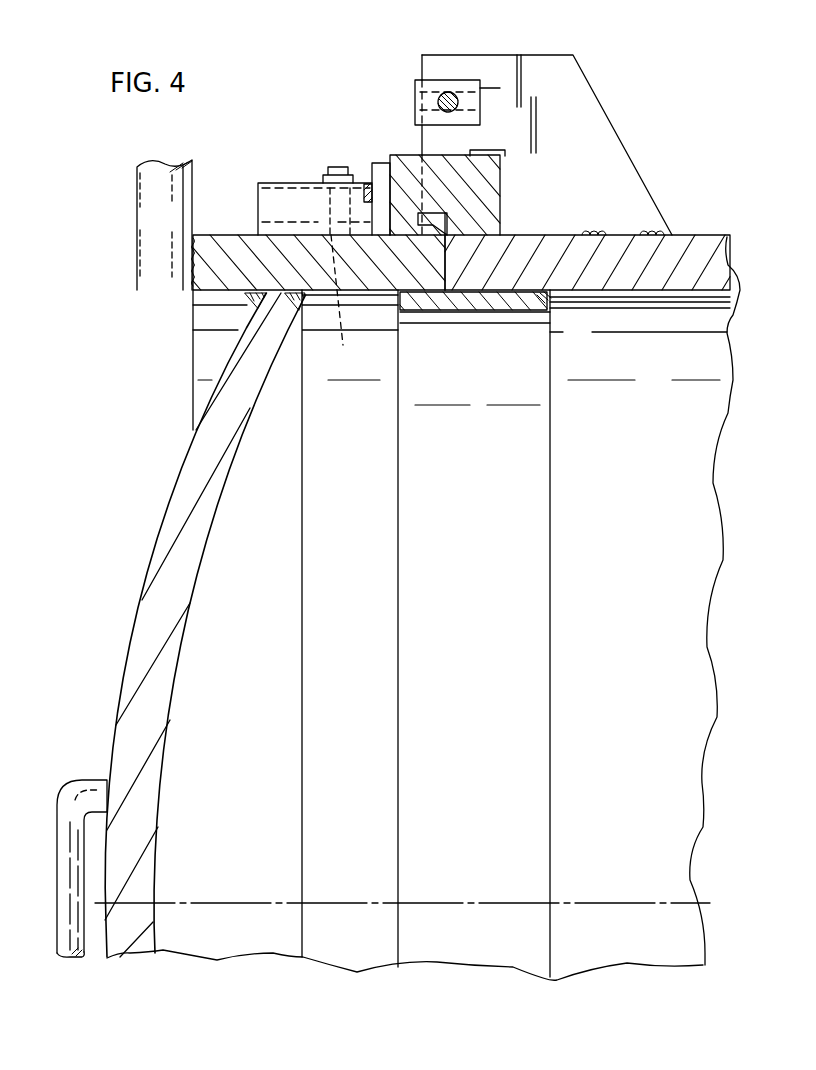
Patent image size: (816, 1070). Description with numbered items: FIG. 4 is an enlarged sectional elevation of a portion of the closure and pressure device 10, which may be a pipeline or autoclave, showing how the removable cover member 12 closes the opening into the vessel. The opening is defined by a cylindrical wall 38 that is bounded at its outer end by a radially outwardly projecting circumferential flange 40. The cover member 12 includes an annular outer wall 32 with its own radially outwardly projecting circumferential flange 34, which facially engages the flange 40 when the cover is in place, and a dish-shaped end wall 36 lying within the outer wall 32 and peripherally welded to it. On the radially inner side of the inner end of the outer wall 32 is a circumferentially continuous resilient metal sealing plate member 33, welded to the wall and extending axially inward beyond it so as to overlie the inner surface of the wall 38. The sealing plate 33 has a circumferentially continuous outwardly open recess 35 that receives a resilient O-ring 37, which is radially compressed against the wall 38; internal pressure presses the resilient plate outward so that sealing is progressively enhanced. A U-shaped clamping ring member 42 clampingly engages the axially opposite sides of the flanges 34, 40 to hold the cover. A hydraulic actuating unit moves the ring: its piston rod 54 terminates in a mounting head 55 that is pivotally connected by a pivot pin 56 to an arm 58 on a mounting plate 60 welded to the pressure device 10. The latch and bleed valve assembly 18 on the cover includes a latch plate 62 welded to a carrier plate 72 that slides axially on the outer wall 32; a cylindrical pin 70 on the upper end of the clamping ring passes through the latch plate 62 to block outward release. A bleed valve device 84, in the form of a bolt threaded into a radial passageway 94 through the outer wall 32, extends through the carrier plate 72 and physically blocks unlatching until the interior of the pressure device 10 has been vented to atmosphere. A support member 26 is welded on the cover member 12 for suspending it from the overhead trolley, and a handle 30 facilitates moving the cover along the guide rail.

The pressure device 10 is at (722, 152).
The cover member 12 is at (128, 383).
The latch and bleed valve assembly 18 is at (328, 101).
The support member 26 is at (140, 216).
The handles 30 is at (82, 782).
The annular outer wall 32 is at (223, 236).
The resilient metal sealing plate member 33 is at (545, 393).
The circumferential flange 34 is at (438, 212).
The recess 35 is at (638, 333).
The dish-shaped end wall 36 is at (134, 667).
The O-ring 37 is at (545, 294).
The cylindrical wall 38 is at (573, 240).
The circumferential flange 40 is at (455, 230).
The clamping ring member 42 is at (497, 160).
The piston rod 54 is at (452, 96).
The mounting head 55 is at (478, 88).
The pivot pin 56 is at (418, 100).
The arm 58 is at (440, 80).
The mounting plate 60 is at (555, 67).
The latch plate 62 is at (381, 168).
The cylindrical pin 70 is at (366, 184).
The carrier plate 72 is at (285, 182).
The bleed valve device 84 is at (337, 167).
The radial passageway 94 is at (342, 301).